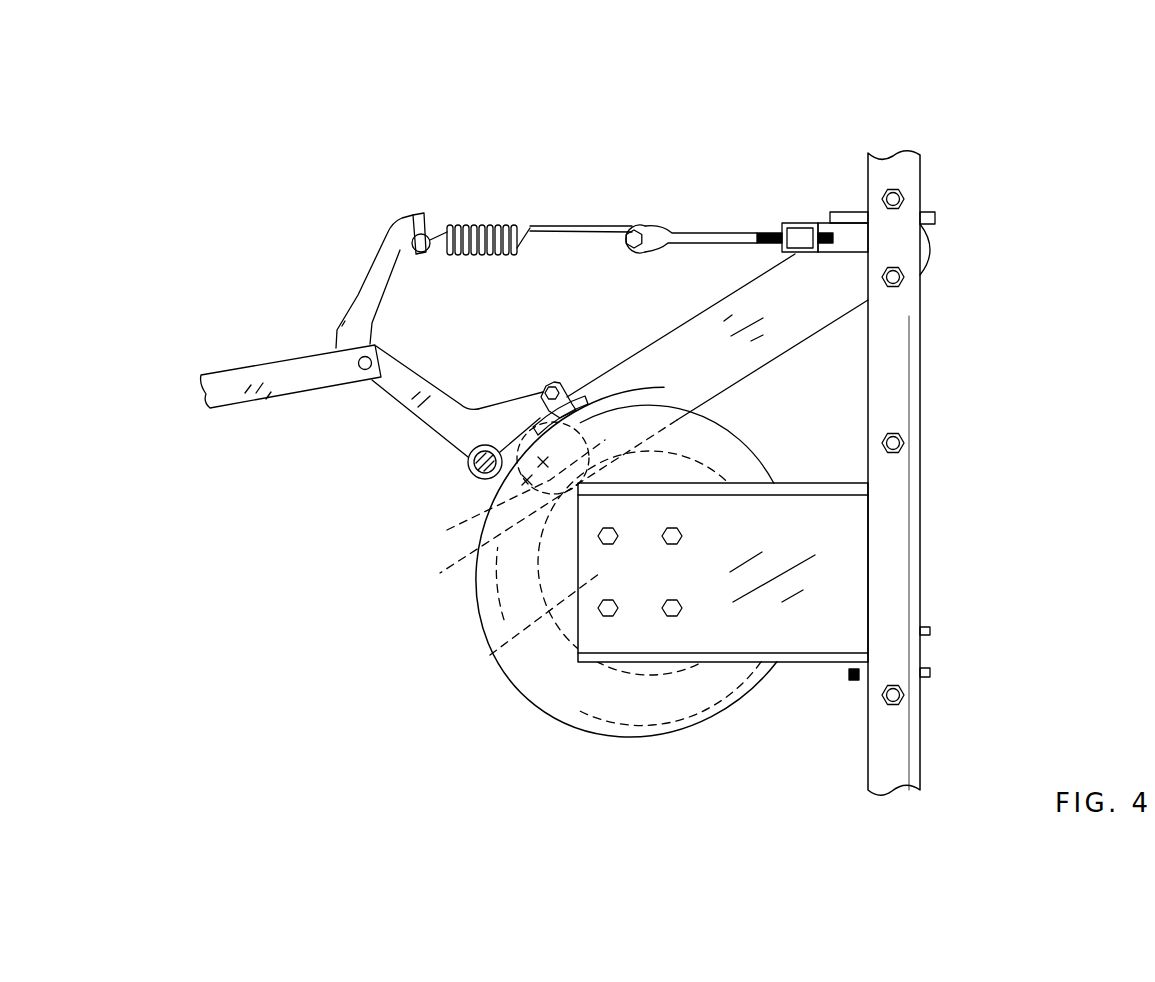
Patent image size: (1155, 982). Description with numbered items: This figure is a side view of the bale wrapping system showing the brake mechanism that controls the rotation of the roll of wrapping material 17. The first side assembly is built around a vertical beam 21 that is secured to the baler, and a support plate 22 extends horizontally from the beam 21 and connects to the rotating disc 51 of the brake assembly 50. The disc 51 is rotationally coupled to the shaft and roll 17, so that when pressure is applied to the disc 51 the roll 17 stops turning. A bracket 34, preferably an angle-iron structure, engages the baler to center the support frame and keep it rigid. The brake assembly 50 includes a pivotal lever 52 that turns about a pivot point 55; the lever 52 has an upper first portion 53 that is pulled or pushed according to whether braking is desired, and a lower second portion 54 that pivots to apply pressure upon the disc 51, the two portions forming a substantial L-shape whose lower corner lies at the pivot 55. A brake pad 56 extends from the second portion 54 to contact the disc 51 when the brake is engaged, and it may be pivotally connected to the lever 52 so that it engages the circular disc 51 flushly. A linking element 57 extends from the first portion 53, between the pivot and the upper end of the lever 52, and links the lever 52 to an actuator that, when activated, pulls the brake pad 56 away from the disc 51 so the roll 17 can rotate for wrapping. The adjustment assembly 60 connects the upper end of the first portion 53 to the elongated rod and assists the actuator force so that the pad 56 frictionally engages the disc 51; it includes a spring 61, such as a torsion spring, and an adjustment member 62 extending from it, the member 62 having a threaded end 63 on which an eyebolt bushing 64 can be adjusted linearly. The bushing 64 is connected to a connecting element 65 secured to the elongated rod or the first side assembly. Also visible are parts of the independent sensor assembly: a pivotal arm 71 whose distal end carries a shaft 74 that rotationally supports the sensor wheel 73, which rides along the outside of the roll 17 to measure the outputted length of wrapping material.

The roll of wrapping material 17 is at (490, 655).
The vertical beam 21 is at (890, 362).
The support plate 22 is at (828, 632).
The bracket 34 is at (933, 222).
The brake assembly 50 is at (375, 124).
The rotating disc 51 is at (556, 697).
The pivotal lever 52 is at (353, 262).
The first portion 53 is at (443, 418).
The second portion 54 is at (503, 410).
The pivot point 55 is at (467, 463).
The brake pad 56 is at (662, 386).
The linking element 57 is at (267, 378).
The adjustment assembly 60 is at (661, 214).
The spring 61 is at (527, 212).
The adjustment member 62 is at (707, 233).
The threaded end 63 is at (757, 232).
The eyebolt bushing 64 is at (800, 234).
The connecting element 65 is at (853, 237).
The pivotal arm 71 is at (852, 366).
The sensor wheel 73 is at (440, 573).
The shaft 74 is at (447, 530).